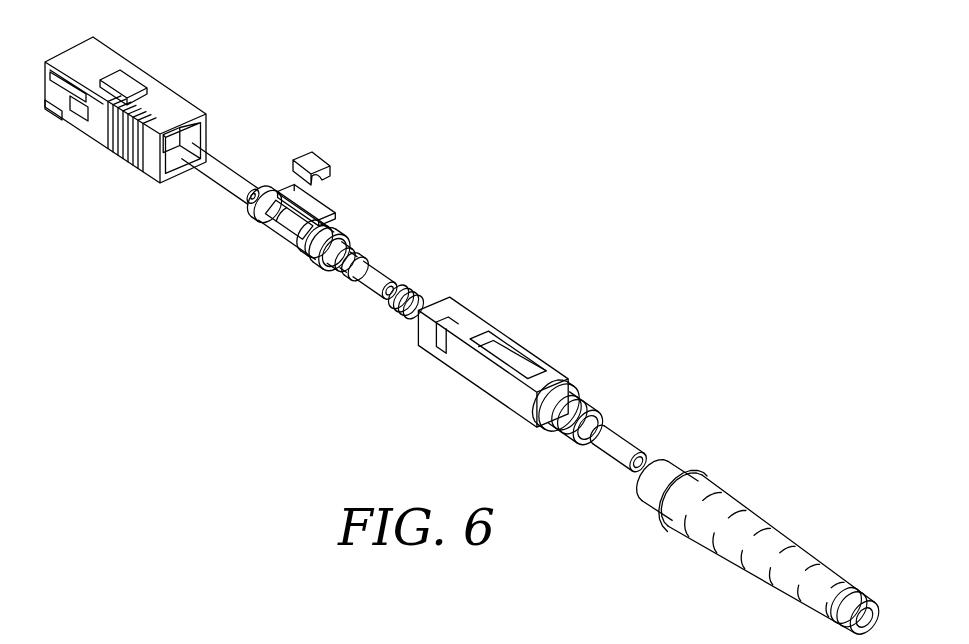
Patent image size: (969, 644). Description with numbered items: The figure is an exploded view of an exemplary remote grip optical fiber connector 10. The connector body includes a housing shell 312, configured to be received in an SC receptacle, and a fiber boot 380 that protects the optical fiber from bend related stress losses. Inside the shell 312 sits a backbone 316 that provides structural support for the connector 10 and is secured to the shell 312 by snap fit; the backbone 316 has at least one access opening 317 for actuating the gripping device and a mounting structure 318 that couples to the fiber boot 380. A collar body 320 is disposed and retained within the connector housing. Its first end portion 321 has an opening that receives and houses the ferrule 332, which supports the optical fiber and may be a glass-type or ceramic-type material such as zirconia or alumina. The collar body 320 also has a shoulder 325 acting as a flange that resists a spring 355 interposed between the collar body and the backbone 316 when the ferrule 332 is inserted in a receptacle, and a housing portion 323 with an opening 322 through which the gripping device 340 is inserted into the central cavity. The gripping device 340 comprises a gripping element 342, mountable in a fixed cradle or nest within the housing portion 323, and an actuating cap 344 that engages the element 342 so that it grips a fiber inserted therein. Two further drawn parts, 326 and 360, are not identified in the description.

The remote grip optical fiber connector 10 is at (182, 43).
The housing shell 312 is at (92, 128).
The ferrule 332 is at (221, 182).
The gripping device 340 is at (345, 168).
The gripping element 342 is at (287, 191).
The actuating cap 344 is at (305, 161).
The collar body 320 is at (360, 234).
The first end portion 321 is at (257, 212).
The opening 322 is at (281, 234).
The housing portion 323 is at (310, 244).
The shoulder 325 is at (331, 273).
The rear extension 326 is at (380, 273).
The spring 355 is at (405, 317).
The backbone 316 is at (545, 377).
The access opening 317 is at (489, 345).
The mounting structure 318 is at (576, 407).
The crimp sleeve 360 is at (624, 443).
The fiber boot 380 is at (737, 503).